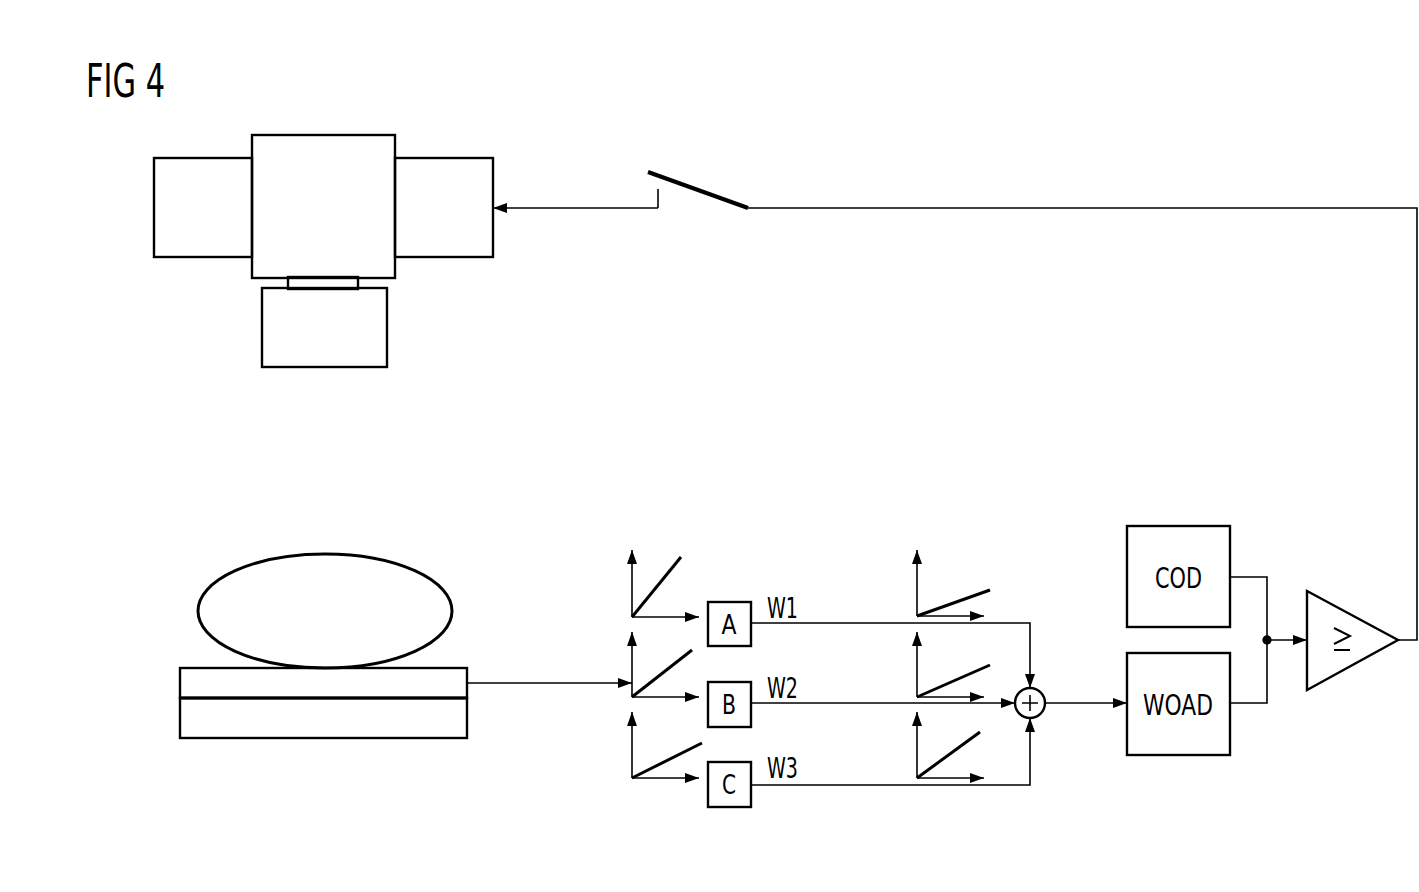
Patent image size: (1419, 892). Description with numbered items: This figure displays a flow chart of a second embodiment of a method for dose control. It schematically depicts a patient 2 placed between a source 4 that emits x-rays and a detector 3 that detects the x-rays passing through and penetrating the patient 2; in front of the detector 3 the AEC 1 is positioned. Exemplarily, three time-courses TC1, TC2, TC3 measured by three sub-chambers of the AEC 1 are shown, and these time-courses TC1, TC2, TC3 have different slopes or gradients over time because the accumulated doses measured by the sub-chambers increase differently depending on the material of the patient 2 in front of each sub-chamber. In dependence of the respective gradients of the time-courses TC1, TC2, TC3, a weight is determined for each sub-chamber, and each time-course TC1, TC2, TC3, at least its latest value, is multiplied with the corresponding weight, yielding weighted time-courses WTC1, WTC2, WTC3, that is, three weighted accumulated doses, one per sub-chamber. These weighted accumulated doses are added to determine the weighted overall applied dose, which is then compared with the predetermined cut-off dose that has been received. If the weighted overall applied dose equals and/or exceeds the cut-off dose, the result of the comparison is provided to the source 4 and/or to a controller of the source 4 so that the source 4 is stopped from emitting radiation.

The AEC 1 is at (180, 683).
The patient 2 is at (198, 612).
The detector 3 is at (180, 717).
The source 4 is at (154, 208).
The time-course TC1 is at (632, 573).
The time-course TC2 is at (632, 652).
The time-course TC3 is at (632, 733).
The weighted thermal characteristic curve 1 WTC1 is at (917, 573).
The weighted thermal characteristic curve 2 WTC2 is at (917, 653).
The weighted thermal characteristic curve 3 WTC3 is at (917, 733).